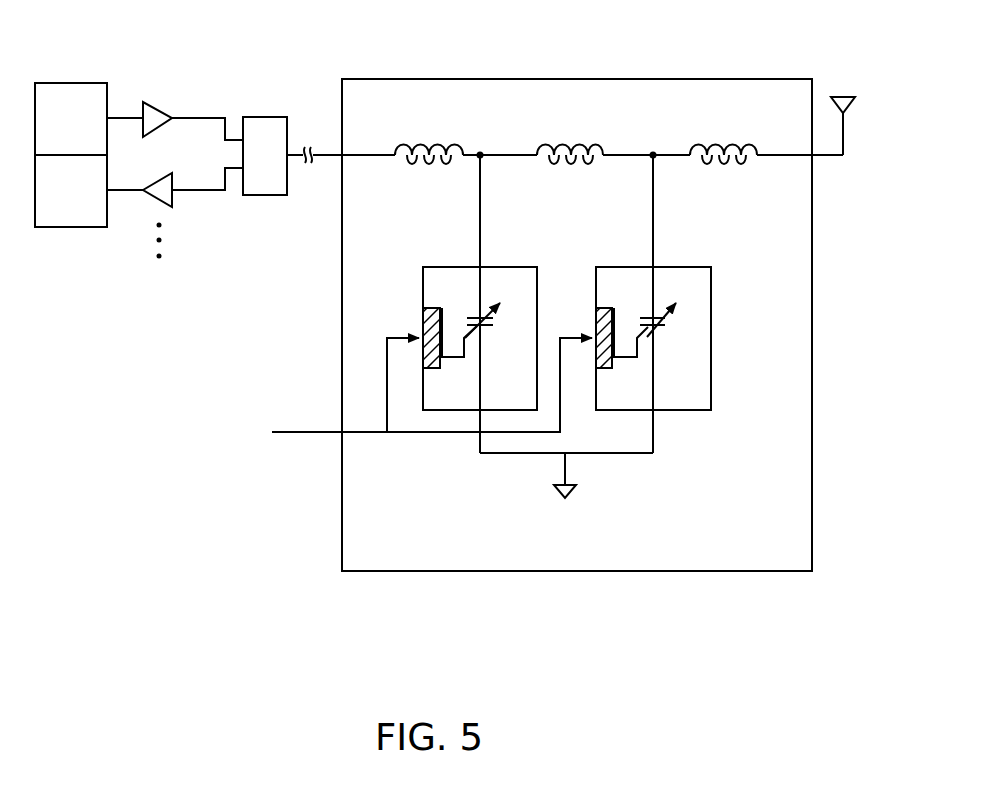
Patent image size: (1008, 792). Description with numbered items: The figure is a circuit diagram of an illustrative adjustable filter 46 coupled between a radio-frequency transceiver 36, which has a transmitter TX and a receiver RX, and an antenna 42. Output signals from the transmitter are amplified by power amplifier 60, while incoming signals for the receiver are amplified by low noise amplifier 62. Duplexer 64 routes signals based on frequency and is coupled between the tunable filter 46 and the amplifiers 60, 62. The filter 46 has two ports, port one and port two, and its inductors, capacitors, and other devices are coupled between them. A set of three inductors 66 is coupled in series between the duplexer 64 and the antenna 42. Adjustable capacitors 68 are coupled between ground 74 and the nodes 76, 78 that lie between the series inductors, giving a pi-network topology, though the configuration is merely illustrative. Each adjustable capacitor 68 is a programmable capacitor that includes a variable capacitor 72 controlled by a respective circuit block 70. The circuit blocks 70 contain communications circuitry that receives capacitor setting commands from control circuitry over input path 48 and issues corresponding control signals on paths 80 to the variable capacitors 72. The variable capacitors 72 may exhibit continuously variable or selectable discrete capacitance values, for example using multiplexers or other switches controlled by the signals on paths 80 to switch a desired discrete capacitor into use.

The transceiver 36 is at (85, 52).
The power amplifier 60 is at (154, 104).
The low noise amplifier 62 is at (168, 200).
The duplexer 64 is at (262, 125).
The adjustable filter 46 is at (585, 572).
The inductors 66 is at (439, 134).
The antenna 42 is at (851, 104).
The node 76 is at (480, 152).
The node 78 is at (653, 152).
The ground 74 is at (573, 493).
The adjustable capacitors 68 is at (440, 265).
The circuit block 70 is at (428, 308).
The variable capacitor 72 is at (495, 289).
The paths 80 is at (452, 360).
The input path 48 is at (310, 435).